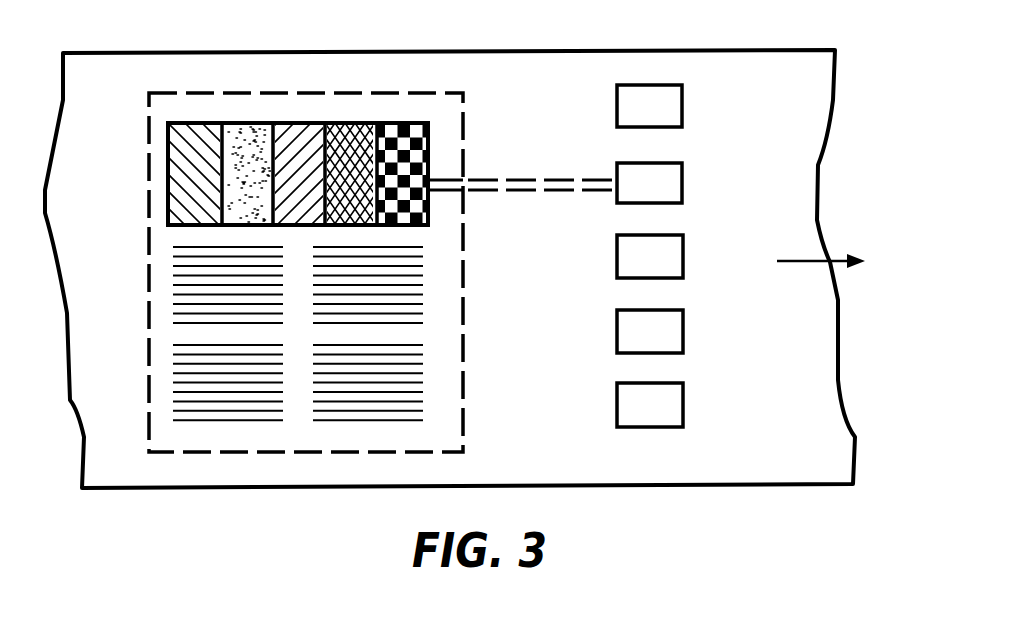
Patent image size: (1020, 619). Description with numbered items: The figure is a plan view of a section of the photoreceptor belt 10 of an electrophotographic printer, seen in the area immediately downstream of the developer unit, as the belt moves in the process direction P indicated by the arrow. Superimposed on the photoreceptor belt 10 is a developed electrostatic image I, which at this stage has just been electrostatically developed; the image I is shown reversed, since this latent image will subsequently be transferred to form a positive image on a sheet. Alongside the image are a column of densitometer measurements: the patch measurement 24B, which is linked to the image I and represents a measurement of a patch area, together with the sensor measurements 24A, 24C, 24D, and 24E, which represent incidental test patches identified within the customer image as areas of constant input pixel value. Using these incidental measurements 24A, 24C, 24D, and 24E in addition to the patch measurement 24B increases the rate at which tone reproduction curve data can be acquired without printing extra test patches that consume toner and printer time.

The photoreceptor belt 10 is at (578, 50).
The sensor measurement 24A is at (682, 100).
The patch measurement 24B is at (682, 170).
The sensor measurement 24C is at (683, 253).
The sensor measurement 24D is at (683, 333).
The sensor measurement 24E is at (683, 400).
The developed electrostatic image I is at (466, 293).
The process direction P is at (833, 263).